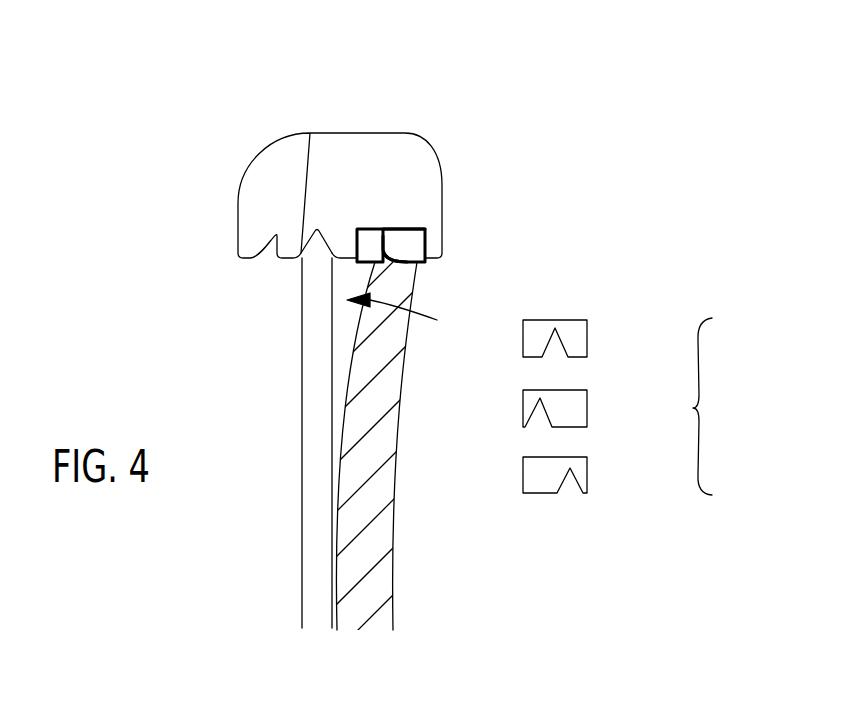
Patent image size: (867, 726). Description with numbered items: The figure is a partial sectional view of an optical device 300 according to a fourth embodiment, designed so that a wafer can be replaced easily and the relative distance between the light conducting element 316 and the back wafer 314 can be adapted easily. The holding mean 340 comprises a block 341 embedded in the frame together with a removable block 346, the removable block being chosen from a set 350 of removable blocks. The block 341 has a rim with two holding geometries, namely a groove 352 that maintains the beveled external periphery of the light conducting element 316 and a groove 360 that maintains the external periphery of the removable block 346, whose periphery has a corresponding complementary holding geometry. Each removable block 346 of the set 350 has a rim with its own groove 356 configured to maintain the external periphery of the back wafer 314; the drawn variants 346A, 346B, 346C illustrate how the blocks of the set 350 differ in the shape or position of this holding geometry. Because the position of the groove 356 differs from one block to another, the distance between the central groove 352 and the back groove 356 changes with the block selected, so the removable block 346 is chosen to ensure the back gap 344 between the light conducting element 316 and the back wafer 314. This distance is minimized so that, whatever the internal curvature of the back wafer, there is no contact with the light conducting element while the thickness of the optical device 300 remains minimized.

The optical device 300 is at (307, 363).
The back wafer 314 is at (363, 513).
The light conducting element 316 is at (313, 519).
The holding mean 340 is at (383, 131).
The block 341 is at (298, 192).
The back gap 344 is at (417, 313).
The removable block 346 is at (372, 248).
The insert with centered projection 346A is at (578, 342).
The insert with left projection 346B is at (578, 408).
The insert with right projection 346C is at (582, 475).
The set of removable blocks 350 is at (640, 406).
The groove 352 is at (317, 230).
The groove 356 is at (393, 247).
The groove 360 is at (405, 228).